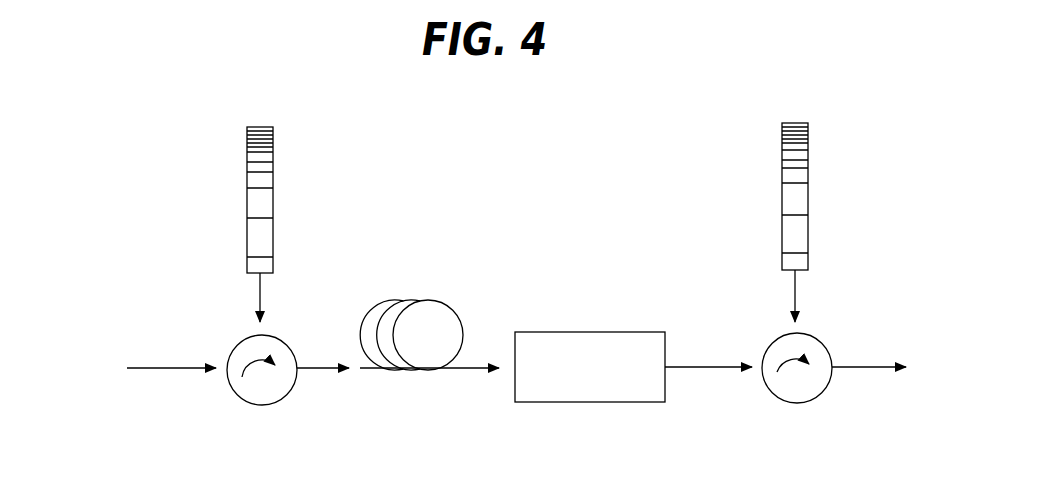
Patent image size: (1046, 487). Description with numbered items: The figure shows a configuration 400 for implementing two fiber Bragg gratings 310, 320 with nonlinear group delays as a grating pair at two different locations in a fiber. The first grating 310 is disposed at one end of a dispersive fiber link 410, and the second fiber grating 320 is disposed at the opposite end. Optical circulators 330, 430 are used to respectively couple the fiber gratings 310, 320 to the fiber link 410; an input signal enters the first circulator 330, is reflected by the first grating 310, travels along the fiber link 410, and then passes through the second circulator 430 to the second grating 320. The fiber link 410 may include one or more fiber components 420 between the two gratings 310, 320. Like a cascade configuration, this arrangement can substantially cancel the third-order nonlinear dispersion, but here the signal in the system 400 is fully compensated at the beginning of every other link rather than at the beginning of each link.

The configuration 400 is at (136, 186).
The first fiber Bragg grating 310 is at (273, 182).
The second fiber Bragg grating 320 is at (808, 195).
The optical circulator 330 is at (237, 397).
The dispersive fiber link 410 is at (425, 368).
The fiber components 420 is at (593, 402).
The optical circulator 430 is at (770, 393).